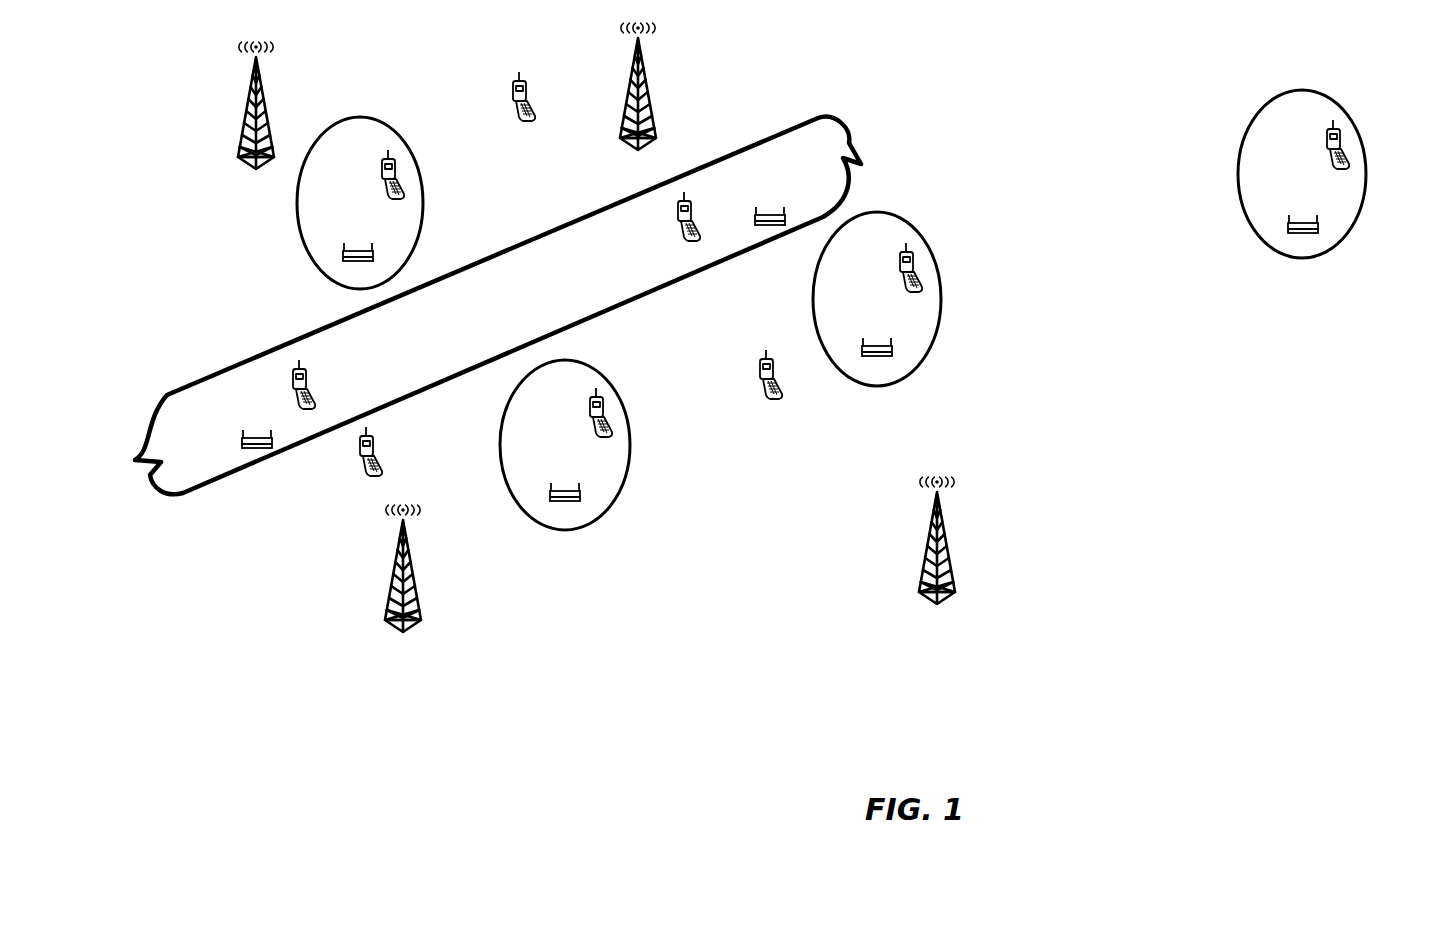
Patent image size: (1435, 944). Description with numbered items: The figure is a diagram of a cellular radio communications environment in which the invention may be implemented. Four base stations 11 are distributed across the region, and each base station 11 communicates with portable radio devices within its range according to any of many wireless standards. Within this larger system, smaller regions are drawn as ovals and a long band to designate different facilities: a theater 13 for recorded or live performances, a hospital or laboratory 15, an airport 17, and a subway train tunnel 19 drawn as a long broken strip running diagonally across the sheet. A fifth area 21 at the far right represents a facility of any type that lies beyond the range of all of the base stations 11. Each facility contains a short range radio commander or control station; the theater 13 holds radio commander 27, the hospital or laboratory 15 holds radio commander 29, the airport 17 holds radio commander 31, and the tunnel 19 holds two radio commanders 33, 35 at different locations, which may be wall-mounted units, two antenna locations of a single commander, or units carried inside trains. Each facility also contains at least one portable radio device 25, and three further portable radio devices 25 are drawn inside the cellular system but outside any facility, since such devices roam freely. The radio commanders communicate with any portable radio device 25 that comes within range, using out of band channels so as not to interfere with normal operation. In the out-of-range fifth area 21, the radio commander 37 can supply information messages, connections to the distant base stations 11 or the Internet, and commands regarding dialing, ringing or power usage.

The base station 11 is at (240, 132).
The theater 13 is at (424, 203).
The hospital or laboratory 15 is at (941, 291).
The airport 17 is at (629, 455).
The subway train tunnel 19 is at (248, 360).
The fifth area 21 is at (1243, 146).
The portable radio device 25 is at (402, 168).
The radio commander 27 is at (343, 256).
The radio commander 29 is at (892, 352).
The radio commander 31 is at (580, 500).
The radio commander 33 is at (252, 448).
The radio commander 35 is at (768, 214).
The radio commander 37 is at (1320, 230).